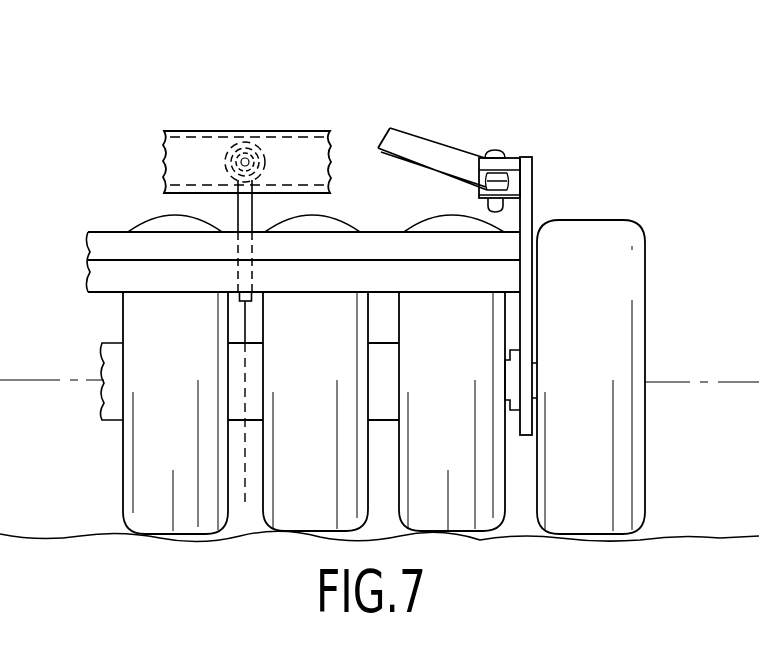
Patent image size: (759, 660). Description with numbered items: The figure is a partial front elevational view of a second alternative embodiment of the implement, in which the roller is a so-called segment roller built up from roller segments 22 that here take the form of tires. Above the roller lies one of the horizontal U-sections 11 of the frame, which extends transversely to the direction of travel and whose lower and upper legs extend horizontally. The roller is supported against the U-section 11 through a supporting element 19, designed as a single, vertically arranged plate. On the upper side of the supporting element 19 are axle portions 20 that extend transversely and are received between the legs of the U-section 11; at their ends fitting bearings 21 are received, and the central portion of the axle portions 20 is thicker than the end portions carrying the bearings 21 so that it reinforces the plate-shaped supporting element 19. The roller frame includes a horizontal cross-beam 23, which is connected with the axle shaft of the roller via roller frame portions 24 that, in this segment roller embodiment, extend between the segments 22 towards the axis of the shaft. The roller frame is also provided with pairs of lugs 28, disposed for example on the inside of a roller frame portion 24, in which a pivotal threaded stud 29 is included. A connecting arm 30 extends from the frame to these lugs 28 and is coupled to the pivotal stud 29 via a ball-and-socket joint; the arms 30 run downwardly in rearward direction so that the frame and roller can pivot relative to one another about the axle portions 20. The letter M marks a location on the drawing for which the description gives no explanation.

The U-section 11 is at (295, 130).
The supporting element 19 is at (242, 212).
The axle portion 20 is at (245, 150).
The bearing 21 is at (230, 160).
The roller segment 22 is at (138, 478).
The cross-beam 23 is at (380, 233).
The roller frame portion 24 is at (527, 334).
The lug 28 is at (513, 158).
The pivotal threaded stud 29 is at (495, 152).
The connecting arm 30 is at (424, 142).
The motor M is at (246, 372).